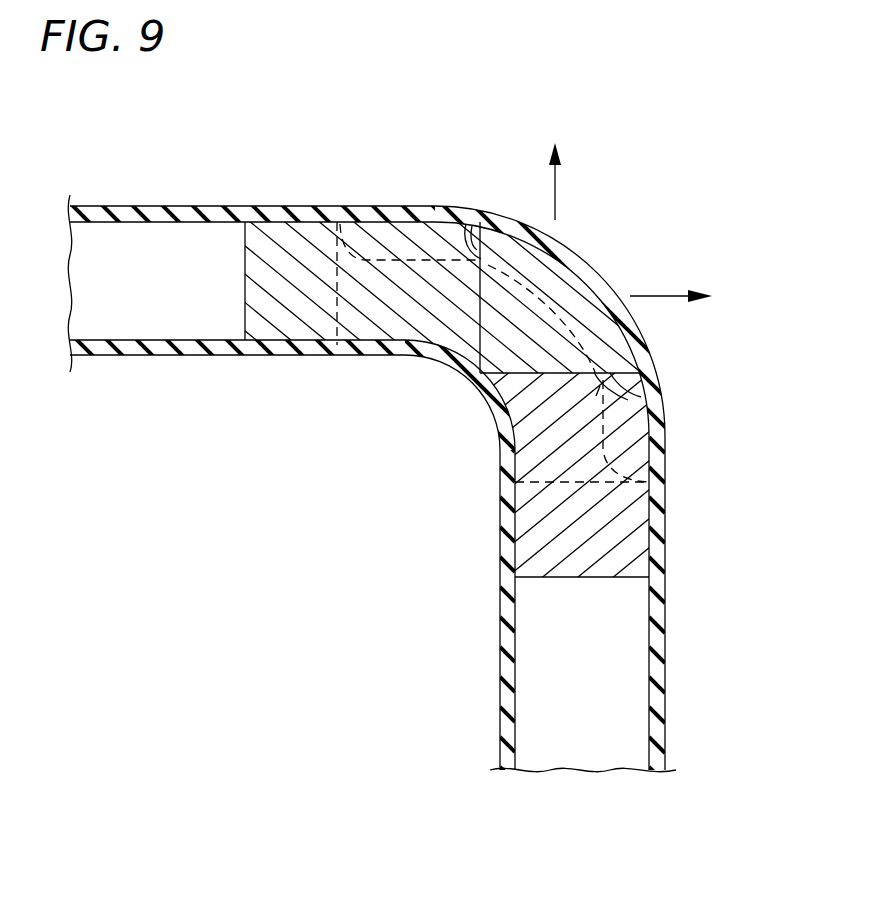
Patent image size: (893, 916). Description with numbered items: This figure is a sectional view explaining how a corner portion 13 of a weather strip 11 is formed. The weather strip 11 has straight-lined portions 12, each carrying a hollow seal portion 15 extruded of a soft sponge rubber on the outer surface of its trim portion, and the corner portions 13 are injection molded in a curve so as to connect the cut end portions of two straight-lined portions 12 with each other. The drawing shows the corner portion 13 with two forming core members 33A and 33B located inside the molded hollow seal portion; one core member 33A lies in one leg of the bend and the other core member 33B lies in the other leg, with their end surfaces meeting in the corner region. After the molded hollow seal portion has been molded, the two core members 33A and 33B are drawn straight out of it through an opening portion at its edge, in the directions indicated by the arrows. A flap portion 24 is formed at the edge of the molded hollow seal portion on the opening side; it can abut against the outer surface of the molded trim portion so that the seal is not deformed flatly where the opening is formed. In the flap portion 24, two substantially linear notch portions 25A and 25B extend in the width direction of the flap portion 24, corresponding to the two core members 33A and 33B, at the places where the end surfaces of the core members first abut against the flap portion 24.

The weather strip 11 is at (477, 432).
The straight-lined portions 12 is at (126, 158).
The corner portions 13 is at (646, 186).
The hollow seal portion 15 is at (174, 207).
The flap portion 24 is at (584, 306).
The notch portion 25A is at (667, 396).
The notch portion 25B is at (474, 207).
The forming core member 33A is at (372, 328).
The forming core member 33B is at (525, 516).